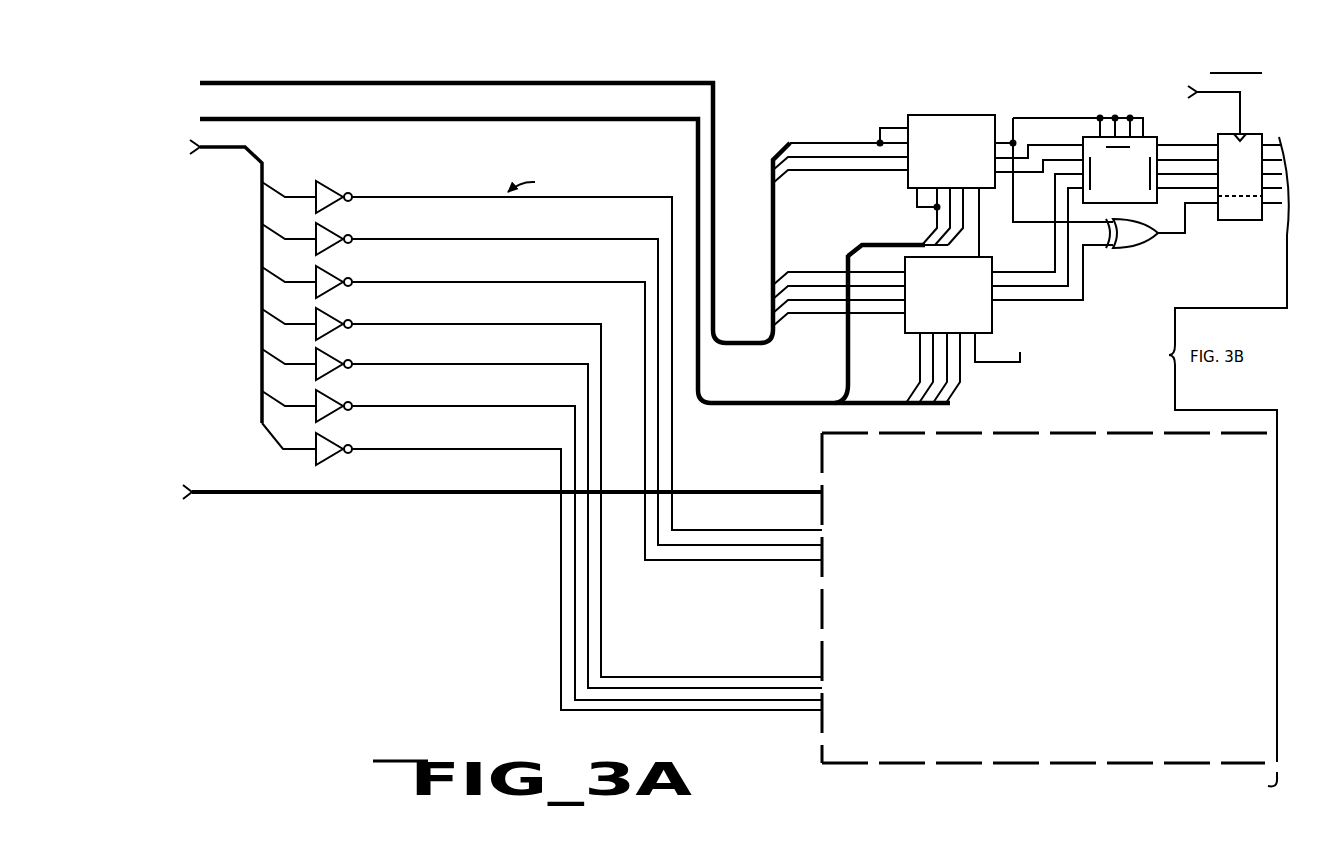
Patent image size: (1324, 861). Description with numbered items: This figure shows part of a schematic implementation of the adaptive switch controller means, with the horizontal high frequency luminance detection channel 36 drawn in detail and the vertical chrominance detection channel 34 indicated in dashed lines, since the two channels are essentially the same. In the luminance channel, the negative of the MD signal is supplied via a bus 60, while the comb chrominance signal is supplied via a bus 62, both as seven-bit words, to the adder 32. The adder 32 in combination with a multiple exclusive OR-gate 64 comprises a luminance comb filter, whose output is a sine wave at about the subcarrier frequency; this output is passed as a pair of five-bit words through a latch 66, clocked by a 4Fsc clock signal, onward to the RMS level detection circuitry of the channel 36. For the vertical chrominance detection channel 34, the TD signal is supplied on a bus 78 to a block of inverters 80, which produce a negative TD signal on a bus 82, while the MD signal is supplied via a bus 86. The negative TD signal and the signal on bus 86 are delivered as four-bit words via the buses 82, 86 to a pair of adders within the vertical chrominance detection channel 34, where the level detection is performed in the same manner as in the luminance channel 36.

The bus 60 is at (210, 83).
The bus 62 is at (210, 119).
The bus 78 is at (210, 152).
The block of inverters 80 is at (334, 183).
The bus 82 is at (672, 481).
The bus 86 is at (203, 498).
The adder 32 is at (897, 240).
The vertical chrominance detection channel 34 is at (818, 605).
The horizontal high frequency luminance detection channel 36 is at (1168, 250).
The multiple exclusive OR-gate 64 is at (1086, 136).
The latch 66 is at (1262, 134).